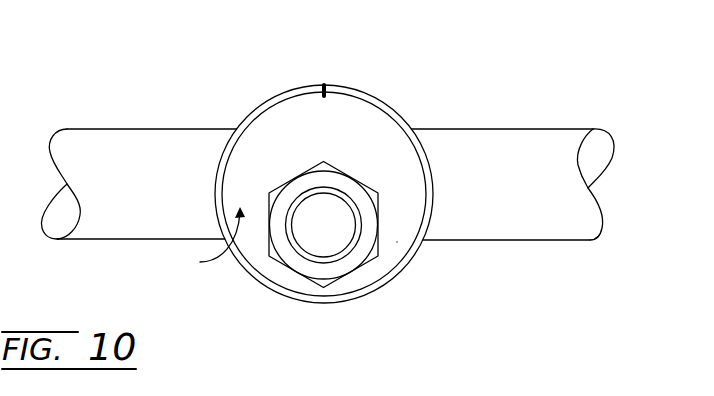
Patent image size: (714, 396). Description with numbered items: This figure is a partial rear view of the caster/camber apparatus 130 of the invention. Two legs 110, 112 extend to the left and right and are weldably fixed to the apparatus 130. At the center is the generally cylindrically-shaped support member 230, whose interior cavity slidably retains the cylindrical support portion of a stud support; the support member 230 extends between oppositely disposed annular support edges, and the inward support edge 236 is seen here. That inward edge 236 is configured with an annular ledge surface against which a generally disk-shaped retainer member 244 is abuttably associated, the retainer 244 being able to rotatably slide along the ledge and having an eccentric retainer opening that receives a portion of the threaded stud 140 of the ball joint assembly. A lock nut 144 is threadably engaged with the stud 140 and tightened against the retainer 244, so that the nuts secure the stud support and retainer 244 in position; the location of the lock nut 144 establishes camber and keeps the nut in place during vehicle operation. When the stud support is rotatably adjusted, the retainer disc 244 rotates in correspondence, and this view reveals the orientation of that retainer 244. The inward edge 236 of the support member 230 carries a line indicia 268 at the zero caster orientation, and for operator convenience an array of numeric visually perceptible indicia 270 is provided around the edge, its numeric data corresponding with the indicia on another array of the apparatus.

The leg 110 is at (167, 145).
The leg 112 is at (497, 143).
The caster/camber apparatus 130 is at (352, 168).
The threaded stud 140 is at (328, 241).
The lock nut 144 is at (302, 267).
The support member 230 is at (392, 108).
The inward support edge 236 is at (275, 102).
The retainer member 244 is at (397, 242).
The line indicia 268 is at (324, 88).
The array of numeric indicia 270 is at (200, 262).